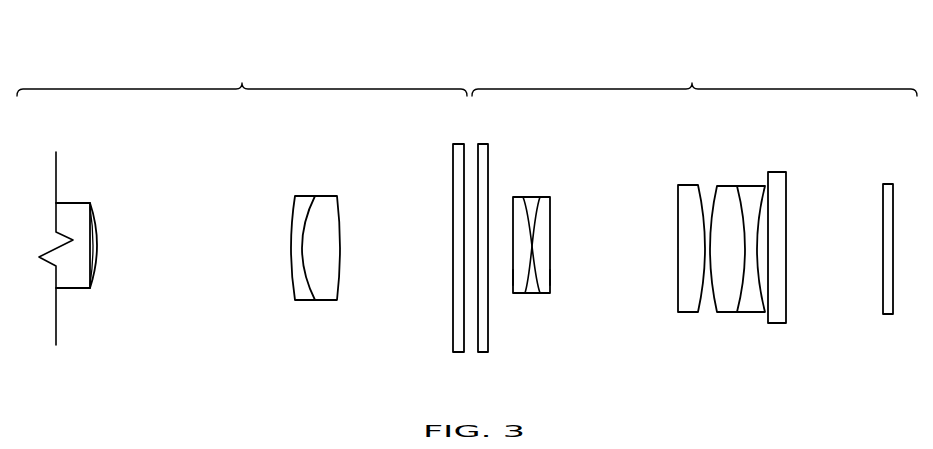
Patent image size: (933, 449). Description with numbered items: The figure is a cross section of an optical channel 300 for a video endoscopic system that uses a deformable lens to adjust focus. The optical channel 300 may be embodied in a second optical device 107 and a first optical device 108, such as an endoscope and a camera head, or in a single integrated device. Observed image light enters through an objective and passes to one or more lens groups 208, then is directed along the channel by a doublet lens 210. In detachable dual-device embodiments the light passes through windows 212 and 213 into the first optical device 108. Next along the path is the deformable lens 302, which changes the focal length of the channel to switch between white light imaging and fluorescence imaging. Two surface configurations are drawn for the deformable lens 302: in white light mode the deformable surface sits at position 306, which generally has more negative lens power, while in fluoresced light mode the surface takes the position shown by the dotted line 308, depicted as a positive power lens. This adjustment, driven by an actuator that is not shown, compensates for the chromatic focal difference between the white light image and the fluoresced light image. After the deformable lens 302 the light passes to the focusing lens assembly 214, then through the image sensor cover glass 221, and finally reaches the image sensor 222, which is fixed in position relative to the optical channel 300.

The optical channel 300 is at (364, 56).
The second optical device 107 is at (242, 78).
The first optical device 108 is at (694, 78).
The lens group 208 is at (97, 175).
The doublet lens 210 is at (307, 196).
The window 212 is at (456, 144).
The window 213 is at (488, 144).
The deformable lens 302 is at (539, 189).
The deformable surface position 306 is at (505, 277).
The deformable surface position 308 is at (558, 277).
The focusing lens assembly 214 is at (711, 168).
The image sensor cover glass 221 is at (773, 172).
The image sensor 222 is at (888, 184).